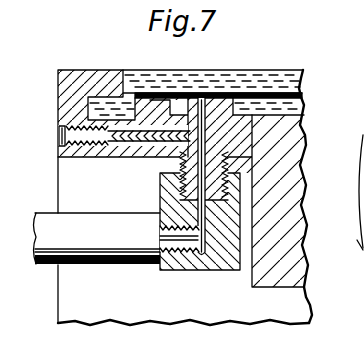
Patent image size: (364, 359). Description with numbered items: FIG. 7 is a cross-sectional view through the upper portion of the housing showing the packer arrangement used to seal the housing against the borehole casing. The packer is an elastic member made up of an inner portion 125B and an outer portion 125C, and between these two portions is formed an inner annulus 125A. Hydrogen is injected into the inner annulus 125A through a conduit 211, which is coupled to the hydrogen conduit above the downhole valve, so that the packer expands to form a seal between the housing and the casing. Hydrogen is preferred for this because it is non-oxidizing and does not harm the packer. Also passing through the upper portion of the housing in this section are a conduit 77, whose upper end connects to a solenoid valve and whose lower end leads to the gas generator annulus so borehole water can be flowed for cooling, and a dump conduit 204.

The outer portion of the packer 125C is at (272, 57).
The inner annulus 125A is at (306, 95).
The inner portion of the packer 125B is at (302, 112).
The conduit 77 is at (358, 165).
The dump conduit 204 is at (360, 222).
The conduit 211 is at (52, 247).